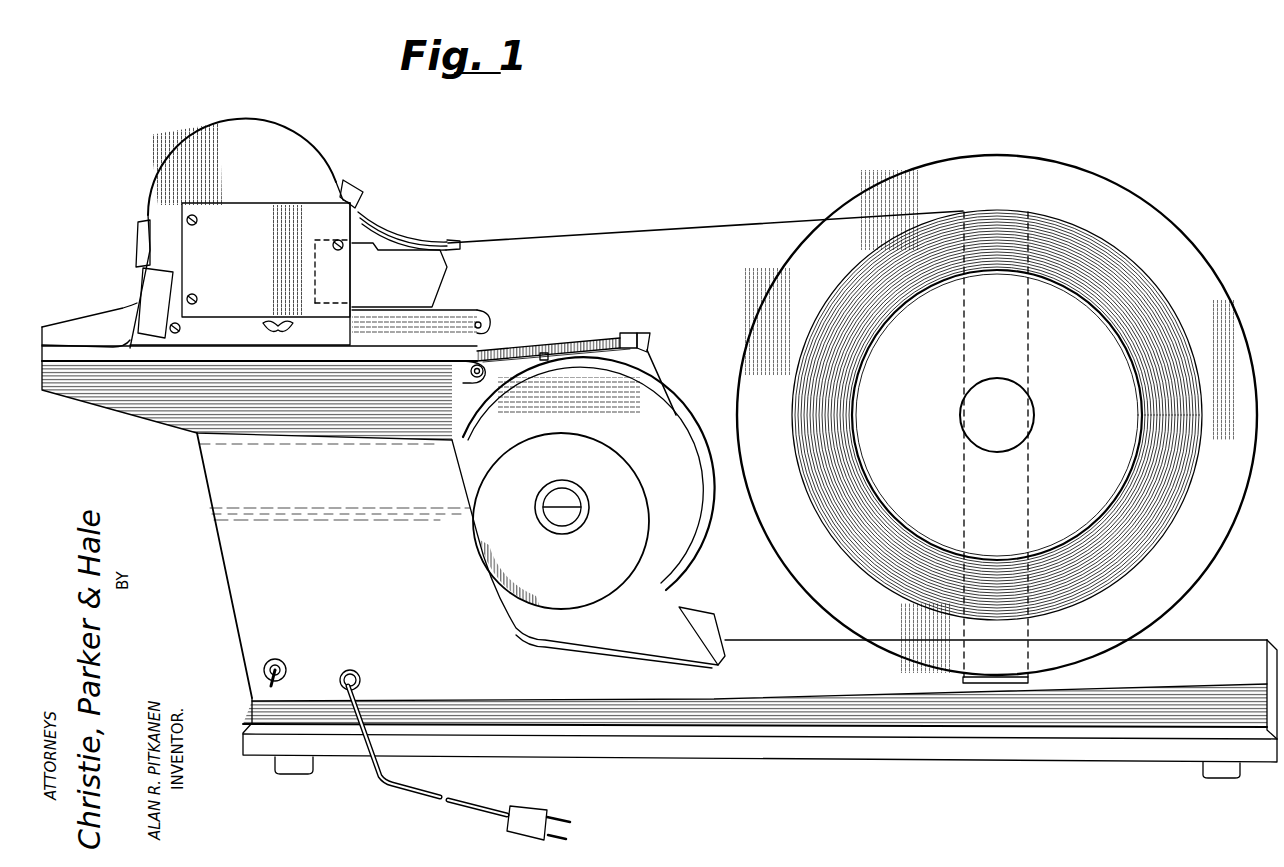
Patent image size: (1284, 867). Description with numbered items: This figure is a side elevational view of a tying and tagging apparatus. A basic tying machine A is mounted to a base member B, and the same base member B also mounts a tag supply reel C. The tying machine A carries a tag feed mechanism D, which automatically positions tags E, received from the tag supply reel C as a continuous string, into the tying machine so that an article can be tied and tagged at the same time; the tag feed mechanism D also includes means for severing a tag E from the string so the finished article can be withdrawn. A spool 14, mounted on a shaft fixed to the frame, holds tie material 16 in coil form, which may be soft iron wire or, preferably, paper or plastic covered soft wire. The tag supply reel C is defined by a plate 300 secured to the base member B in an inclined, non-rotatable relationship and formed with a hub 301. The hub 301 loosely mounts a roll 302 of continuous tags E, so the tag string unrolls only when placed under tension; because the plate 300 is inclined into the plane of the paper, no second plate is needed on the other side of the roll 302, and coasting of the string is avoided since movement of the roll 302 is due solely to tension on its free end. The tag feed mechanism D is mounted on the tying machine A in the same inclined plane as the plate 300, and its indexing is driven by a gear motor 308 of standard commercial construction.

The tying machine A is at (203, 505).
The base member B is at (940, 746).
The tag supply reel C is at (1160, 582).
The tag feed mechanism D is at (190, 155).
The tags E is at (612, 233).
The spool 14 is at (693, 591).
The tie material 16 is at (663, 386).
The plate 300 is at (1200, 280).
The hub 301 is at (1007, 423).
The roll of tags 302 is at (1135, 285).
The gear motor 308 is at (222, 238).